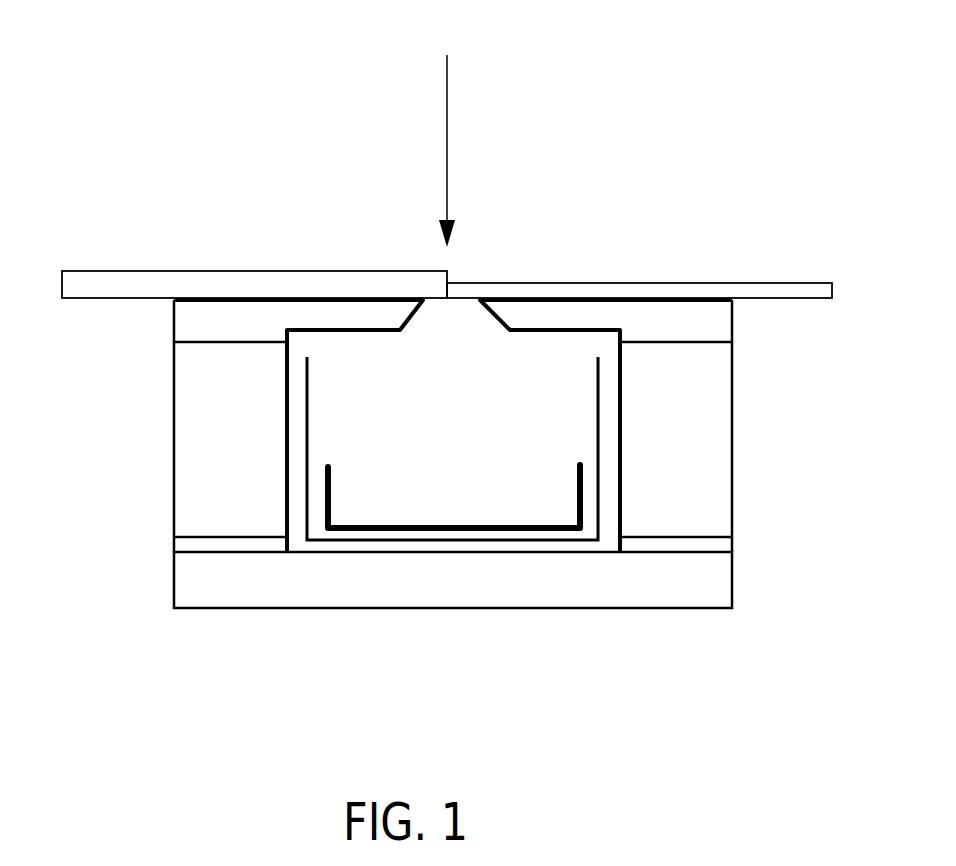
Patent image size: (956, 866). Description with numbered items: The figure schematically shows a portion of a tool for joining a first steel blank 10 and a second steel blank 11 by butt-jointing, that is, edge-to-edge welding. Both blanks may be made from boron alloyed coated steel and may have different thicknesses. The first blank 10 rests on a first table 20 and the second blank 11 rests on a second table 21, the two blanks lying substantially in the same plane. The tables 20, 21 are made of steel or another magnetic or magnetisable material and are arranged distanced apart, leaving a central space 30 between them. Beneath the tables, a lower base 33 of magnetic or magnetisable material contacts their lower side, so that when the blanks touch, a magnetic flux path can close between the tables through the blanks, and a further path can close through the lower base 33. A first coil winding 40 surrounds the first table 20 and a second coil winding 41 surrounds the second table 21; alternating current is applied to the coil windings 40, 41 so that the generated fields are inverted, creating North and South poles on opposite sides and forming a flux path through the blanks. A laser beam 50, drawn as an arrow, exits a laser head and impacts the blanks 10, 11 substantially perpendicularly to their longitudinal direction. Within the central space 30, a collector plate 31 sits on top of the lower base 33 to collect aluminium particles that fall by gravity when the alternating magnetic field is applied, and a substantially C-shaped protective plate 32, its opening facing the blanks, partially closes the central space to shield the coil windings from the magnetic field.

The first steel blank 10 is at (140, 283).
The second steel blank 11 is at (782, 290).
The first table 20 is at (207, 333).
The second table 21 is at (695, 325).
The central space 30 is at (557, 350).
The collector plate 31 is at (550, 530).
The protective plate 32 is at (307, 522).
The lower base 33 is at (193, 576).
The first coil winding 40 is at (193, 482).
The second coil winding 41 is at (717, 477).
The laser beam 50 is at (448, 129).